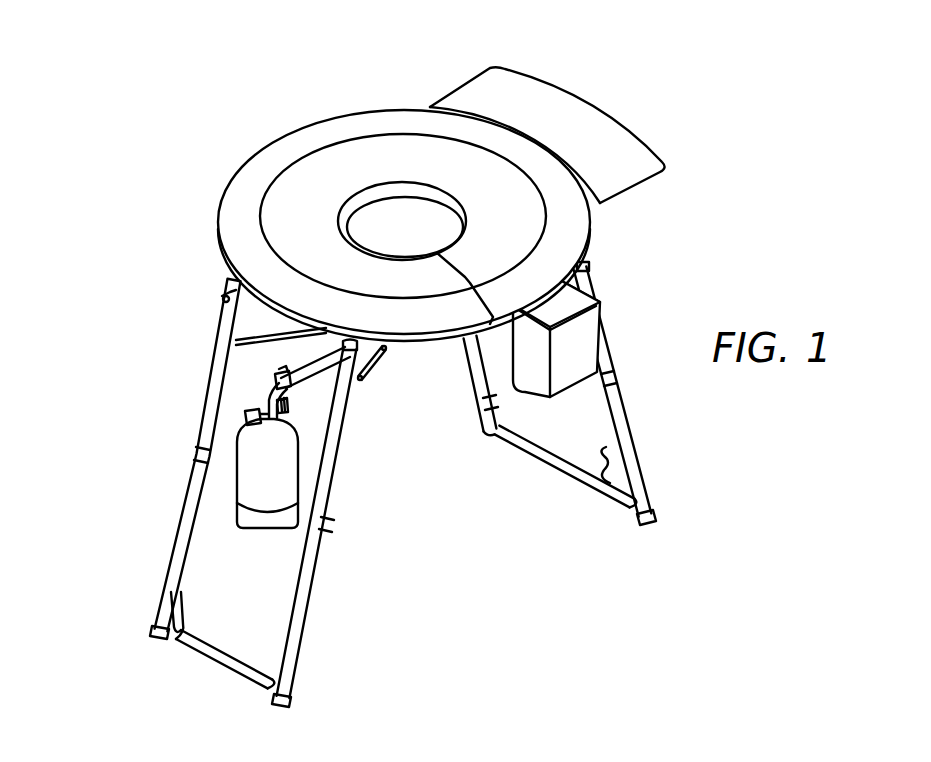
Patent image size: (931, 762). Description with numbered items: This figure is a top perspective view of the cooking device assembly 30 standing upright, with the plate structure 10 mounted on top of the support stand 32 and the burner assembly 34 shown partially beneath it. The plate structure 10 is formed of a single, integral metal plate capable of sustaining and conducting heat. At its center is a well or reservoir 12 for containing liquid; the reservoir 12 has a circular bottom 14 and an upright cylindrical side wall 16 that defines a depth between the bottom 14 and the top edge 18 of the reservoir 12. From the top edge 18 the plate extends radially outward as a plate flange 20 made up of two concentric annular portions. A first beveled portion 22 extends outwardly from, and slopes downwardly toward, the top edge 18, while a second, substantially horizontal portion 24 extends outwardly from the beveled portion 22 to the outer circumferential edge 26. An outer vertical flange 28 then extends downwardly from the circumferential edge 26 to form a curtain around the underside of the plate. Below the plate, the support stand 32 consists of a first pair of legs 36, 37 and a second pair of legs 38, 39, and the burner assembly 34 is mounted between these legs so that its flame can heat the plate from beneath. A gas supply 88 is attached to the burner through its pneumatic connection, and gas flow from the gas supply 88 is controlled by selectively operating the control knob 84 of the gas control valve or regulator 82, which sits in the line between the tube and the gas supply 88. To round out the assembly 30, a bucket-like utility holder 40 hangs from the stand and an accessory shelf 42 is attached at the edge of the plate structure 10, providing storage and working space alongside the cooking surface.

The plate structure 10 is at (394, 176).
The reservoir 12 is at (318, 200).
The circular bottom 14 is at (408, 213).
The cylindrical side wall 16 is at (438, 199).
The top edge 18 is at (478, 222).
The plate flange 20 is at (470, 288).
The beveled portion 22 is at (412, 150).
The horizontal portion 24 is at (318, 128).
The outer circumferential edge 26 is at (218, 216).
The outer vertical flange 28 is at (233, 293).
The cooking device assembly 30 is at (365, 480).
The support stand 32 is at (147, 465).
The burner assembly 34 is at (387, 538).
The leg 36 is at (175, 562).
The leg 37 is at (305, 572).
The leg 38 is at (477, 372).
The leg 39 is at (627, 430).
The utility holder 40 is at (583, 298).
The accessory shelf 42 is at (630, 148).
The gas control valve 82 is at (312, 411).
The control knob 84 is at (250, 425).
The gas supply 88 is at (247, 500).